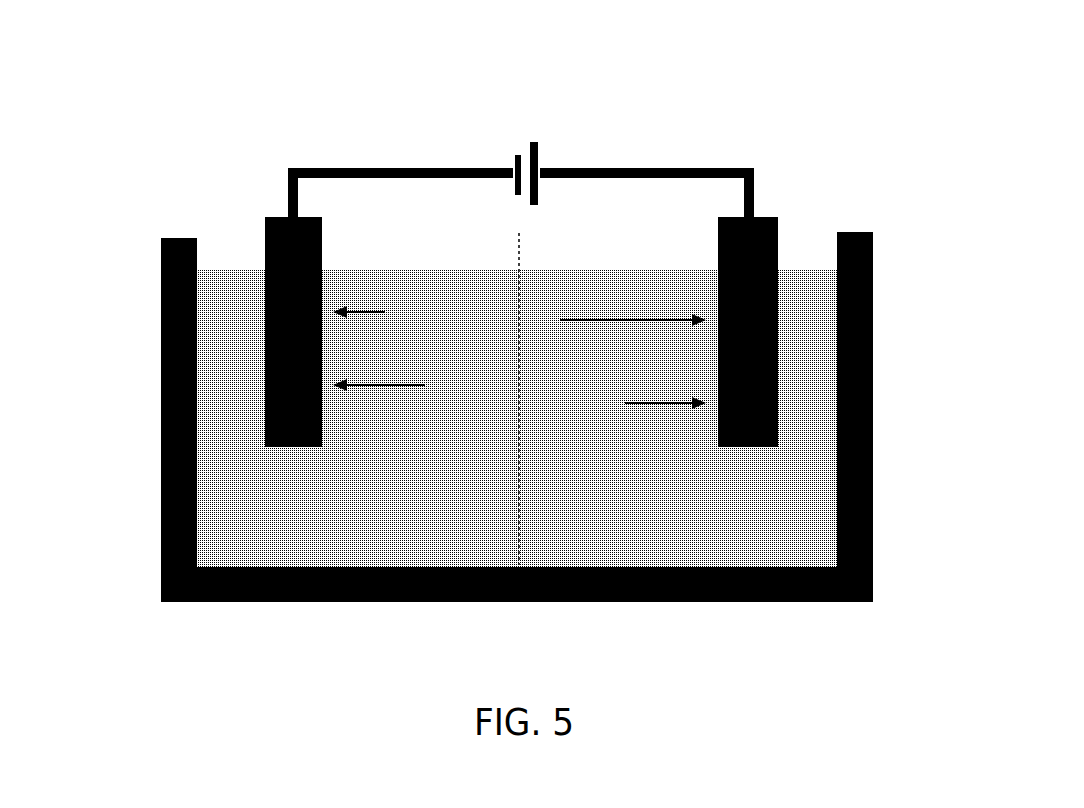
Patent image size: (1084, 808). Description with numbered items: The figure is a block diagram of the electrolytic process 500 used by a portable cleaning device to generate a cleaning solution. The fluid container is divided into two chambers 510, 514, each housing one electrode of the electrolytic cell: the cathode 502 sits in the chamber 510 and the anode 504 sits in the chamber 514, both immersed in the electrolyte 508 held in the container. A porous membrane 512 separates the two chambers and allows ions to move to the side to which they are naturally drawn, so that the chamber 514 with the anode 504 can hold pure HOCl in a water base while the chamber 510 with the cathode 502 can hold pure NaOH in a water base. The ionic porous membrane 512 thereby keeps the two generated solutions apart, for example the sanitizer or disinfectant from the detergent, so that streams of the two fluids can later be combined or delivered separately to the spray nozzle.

The electrolysis system 500 is at (267, 52).
The cathode 502 is at (265, 245).
The anode 504 is at (778, 235).
The electrolyte solution 508 is at (230, 470).
The chamber 510 is at (173, 268).
The porous membrane 512 is at (519, 255).
The chamber 514 is at (865, 363).